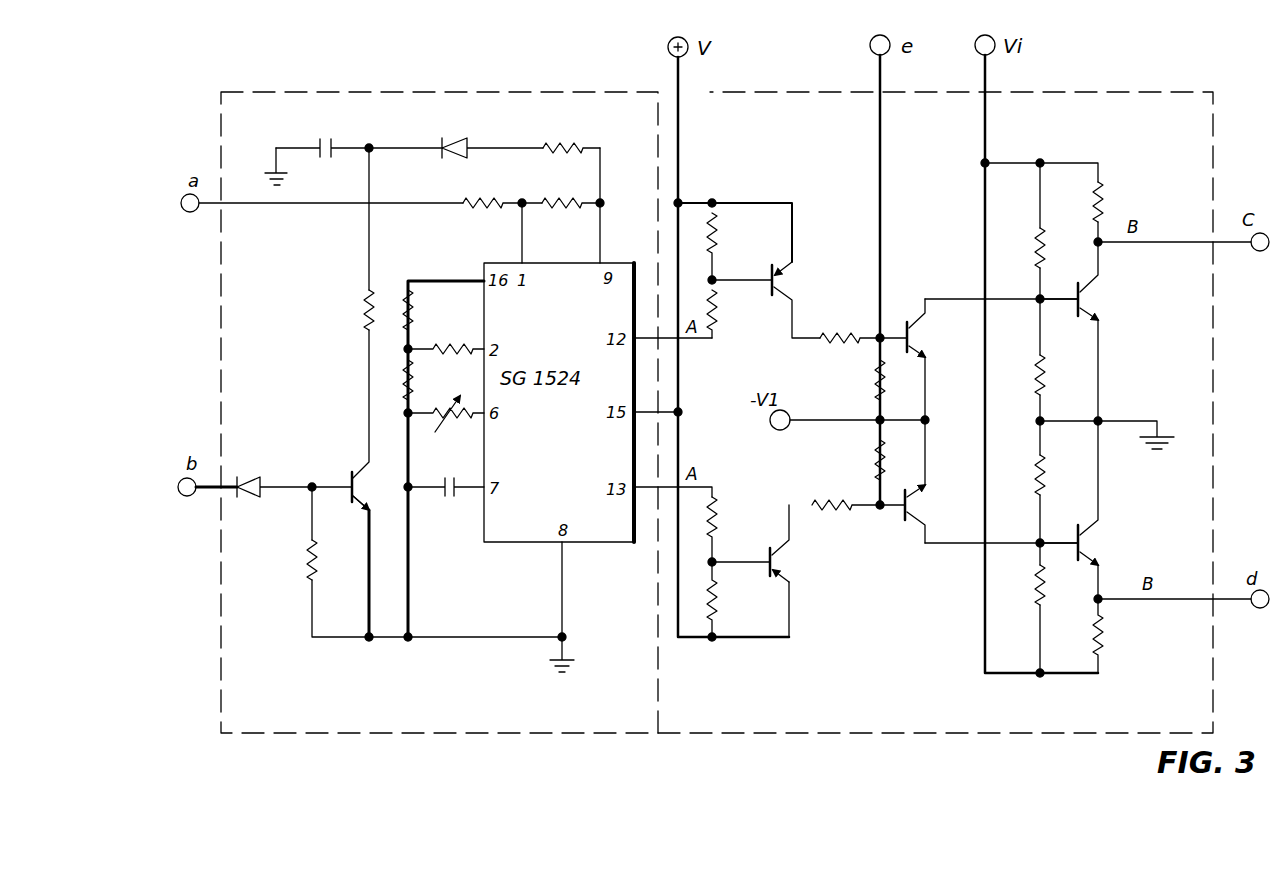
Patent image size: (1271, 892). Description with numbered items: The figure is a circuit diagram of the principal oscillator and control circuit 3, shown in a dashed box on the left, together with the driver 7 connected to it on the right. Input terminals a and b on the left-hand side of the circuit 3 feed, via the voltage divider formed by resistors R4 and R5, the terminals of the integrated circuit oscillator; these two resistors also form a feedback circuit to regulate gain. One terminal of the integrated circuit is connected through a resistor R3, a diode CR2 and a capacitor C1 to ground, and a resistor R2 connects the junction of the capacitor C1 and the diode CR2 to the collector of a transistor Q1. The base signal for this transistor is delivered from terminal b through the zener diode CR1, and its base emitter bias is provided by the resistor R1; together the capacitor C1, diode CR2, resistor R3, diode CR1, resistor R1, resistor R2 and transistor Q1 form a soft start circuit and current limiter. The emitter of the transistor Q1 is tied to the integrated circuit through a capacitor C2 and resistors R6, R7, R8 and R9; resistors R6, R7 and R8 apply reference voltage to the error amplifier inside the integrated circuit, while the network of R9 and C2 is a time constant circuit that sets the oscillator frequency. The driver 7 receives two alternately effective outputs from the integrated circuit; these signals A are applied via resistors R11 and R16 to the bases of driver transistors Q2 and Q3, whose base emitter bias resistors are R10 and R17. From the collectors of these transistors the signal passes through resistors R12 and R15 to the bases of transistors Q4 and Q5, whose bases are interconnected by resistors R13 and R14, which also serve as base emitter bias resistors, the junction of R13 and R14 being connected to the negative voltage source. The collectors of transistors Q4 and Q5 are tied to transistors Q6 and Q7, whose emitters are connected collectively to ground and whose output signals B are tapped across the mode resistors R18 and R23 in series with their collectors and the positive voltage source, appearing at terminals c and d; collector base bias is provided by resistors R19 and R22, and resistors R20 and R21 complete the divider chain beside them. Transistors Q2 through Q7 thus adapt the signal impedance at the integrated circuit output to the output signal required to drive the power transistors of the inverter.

The circuit 3 is at (520, 101).
The driver 7 is at (1212, 98).
The capacitor C1 is at (359, 136).
The capacitor C2 is at (446, 501).
The zener diode CR1 is at (294, 478).
The diode CR2 is at (490, 135).
The resistor R1 is at (325, 560).
The resistor R2 is at (382, 295).
The resistor R3 is at (571, 133).
The resistor R4 is at (571, 190).
The resistor R5 is at (502, 190).
The resistor R6 is at (422, 308).
The resistor R7 is at (422, 380).
The resistor R8 is at (446, 339).
The resistor R9 is at (446, 418).
The base emitter bias resistor R10 is at (731, 246).
The resistor R11 is at (731, 314).
The resistor R12 is at (850, 326).
The resistor R13 is at (860, 390).
The resistor R14 is at (860, 462).
The resistor R15 is at (858, 520).
The resistor R16 is at (731, 529).
The base emitter bias resistor R17 is at (731, 599).
The mode resistor R18 is at (1118, 202).
The resistor R19 is at (1059, 248).
The resistor R20 is at (1058, 375).
The resistor R21 is at (1058, 475).
The resistor R22 is at (1058, 585).
The mode resistor R23 is at (1117, 636).
The transistor Q1 is at (368, 491).
The driver transistor Q2 is at (766, 300).
The driver transistor Q3 is at (763, 571).
The transistor Q4 is at (909, 359).
The transistor Q5 is at (926, 481).
The transistor Q6 is at (1080, 331).
The transistor Q7 is at (1080, 510).